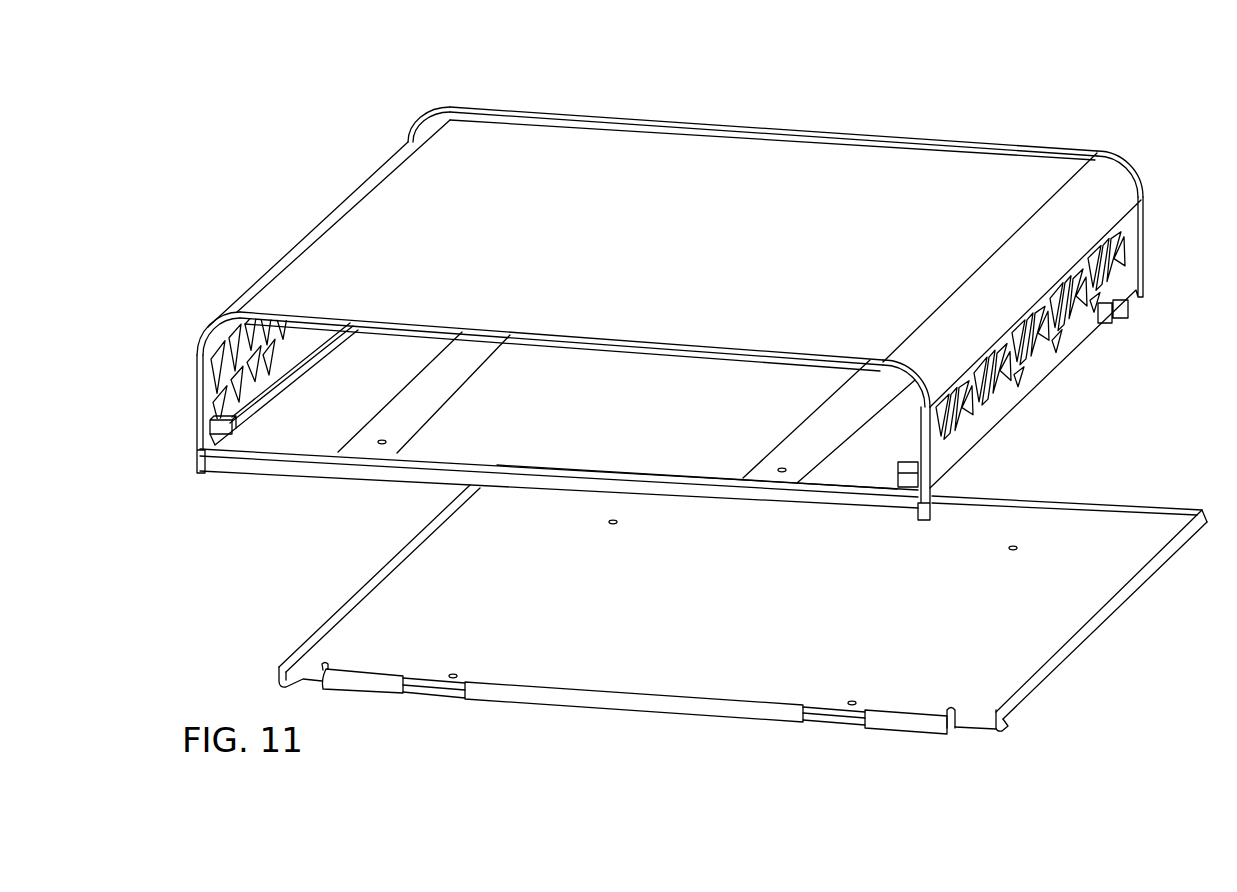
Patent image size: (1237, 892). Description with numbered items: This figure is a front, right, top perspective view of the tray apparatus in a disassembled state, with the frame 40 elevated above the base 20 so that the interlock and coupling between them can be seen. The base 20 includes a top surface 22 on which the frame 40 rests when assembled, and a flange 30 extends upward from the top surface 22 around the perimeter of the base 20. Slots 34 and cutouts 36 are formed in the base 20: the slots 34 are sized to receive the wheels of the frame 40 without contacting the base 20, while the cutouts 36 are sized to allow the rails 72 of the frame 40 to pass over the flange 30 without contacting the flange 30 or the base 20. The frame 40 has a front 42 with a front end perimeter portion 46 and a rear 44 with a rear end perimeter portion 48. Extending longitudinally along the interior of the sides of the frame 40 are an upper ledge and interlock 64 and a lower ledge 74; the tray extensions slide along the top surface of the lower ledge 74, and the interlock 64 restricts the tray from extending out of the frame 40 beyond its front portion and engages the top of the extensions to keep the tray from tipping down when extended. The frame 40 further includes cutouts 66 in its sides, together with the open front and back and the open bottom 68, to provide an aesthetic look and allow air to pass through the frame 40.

The base 20 is at (1003, 632).
The top surface 22 is at (1120, 540).
The flange 30 is at (1027, 702).
The slots 34 is at (967, 733).
The cutouts 36 is at (822, 727).
The frame 40 is at (853, 177).
The front 42 is at (417, 485).
The rear 44 is at (608, 118).
The front end perimeter portion 46 is at (922, 455).
The rear end perimeter portion 48 is at (1145, 240).
The upper ledge and interlock 64 is at (218, 432).
The cutouts 66 is at (1042, 350).
The open bottom 68 is at (660, 407).
The rails 72 is at (443, 392).
The lower ledge 74 is at (258, 408).